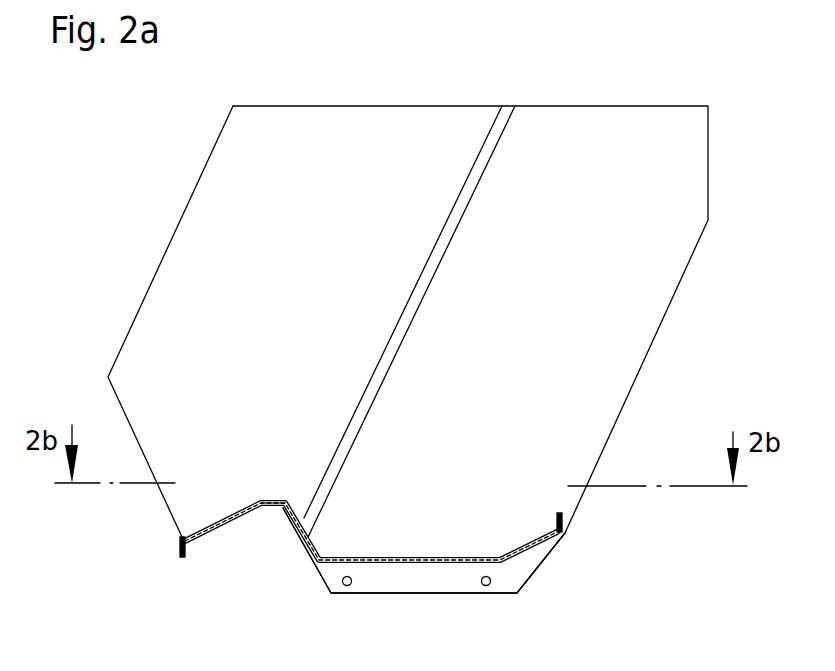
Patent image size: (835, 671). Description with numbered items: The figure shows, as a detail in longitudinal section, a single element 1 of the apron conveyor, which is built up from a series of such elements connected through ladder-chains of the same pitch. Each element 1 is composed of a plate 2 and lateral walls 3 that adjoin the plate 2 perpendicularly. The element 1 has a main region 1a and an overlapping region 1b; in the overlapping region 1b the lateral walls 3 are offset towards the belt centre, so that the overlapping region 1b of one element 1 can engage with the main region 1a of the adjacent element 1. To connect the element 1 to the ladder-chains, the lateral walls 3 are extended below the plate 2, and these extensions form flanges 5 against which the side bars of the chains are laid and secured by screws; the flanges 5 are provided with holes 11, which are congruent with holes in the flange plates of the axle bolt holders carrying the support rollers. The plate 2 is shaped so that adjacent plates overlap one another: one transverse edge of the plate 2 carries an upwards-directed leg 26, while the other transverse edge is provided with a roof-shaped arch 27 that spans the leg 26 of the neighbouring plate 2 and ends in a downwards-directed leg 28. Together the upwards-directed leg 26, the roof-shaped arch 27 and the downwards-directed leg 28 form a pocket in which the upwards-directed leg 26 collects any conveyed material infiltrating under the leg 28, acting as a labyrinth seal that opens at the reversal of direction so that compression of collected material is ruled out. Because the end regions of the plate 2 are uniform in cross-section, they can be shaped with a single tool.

The element 1 is at (723, 77).
The main region 1a is at (630, 300).
The overlapping region 1b is at (197, 257).
The plate 2 is at (385, 567).
The lateral wall 3 is at (425, 455).
The flange 5 is at (455, 578).
The hole 11 is at (347, 590).
The upwards-directed leg 26 is at (566, 520).
The roof-shaped arch 27 is at (262, 498).
The downwards-directed leg 28 is at (180, 553).